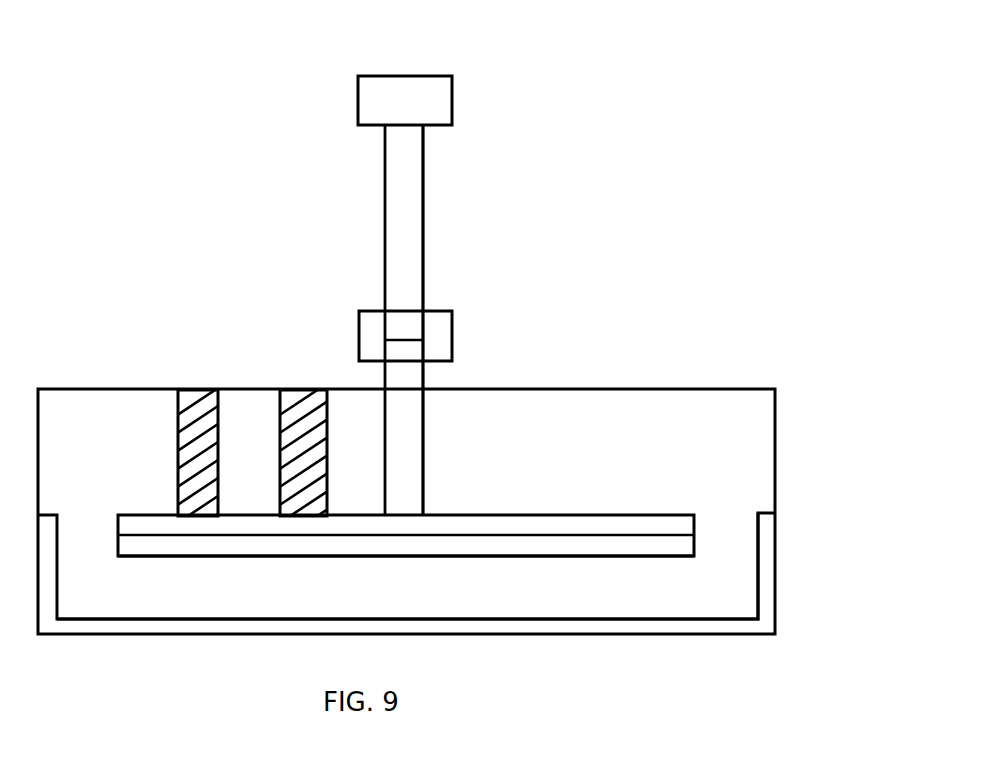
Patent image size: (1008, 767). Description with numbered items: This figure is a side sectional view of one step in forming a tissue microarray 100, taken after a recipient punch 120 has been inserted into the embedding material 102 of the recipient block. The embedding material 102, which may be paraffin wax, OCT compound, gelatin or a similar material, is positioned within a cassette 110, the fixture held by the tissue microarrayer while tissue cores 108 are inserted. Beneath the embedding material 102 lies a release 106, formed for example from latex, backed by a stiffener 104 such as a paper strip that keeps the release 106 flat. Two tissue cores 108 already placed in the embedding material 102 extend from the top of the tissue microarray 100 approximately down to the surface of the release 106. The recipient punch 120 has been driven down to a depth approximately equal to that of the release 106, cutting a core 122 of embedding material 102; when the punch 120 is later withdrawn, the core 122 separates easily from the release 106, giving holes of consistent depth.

The tissue microarray 100 is at (768, 339).
The embedding material 102 is at (778, 441).
The stiffener 104 is at (620, 556).
The release 106 is at (619, 513).
The tissue cores 108 is at (296, 390).
The cassette 110 is at (777, 576).
The recipient punch 120 is at (454, 104).
The core 122 is at (406, 452).